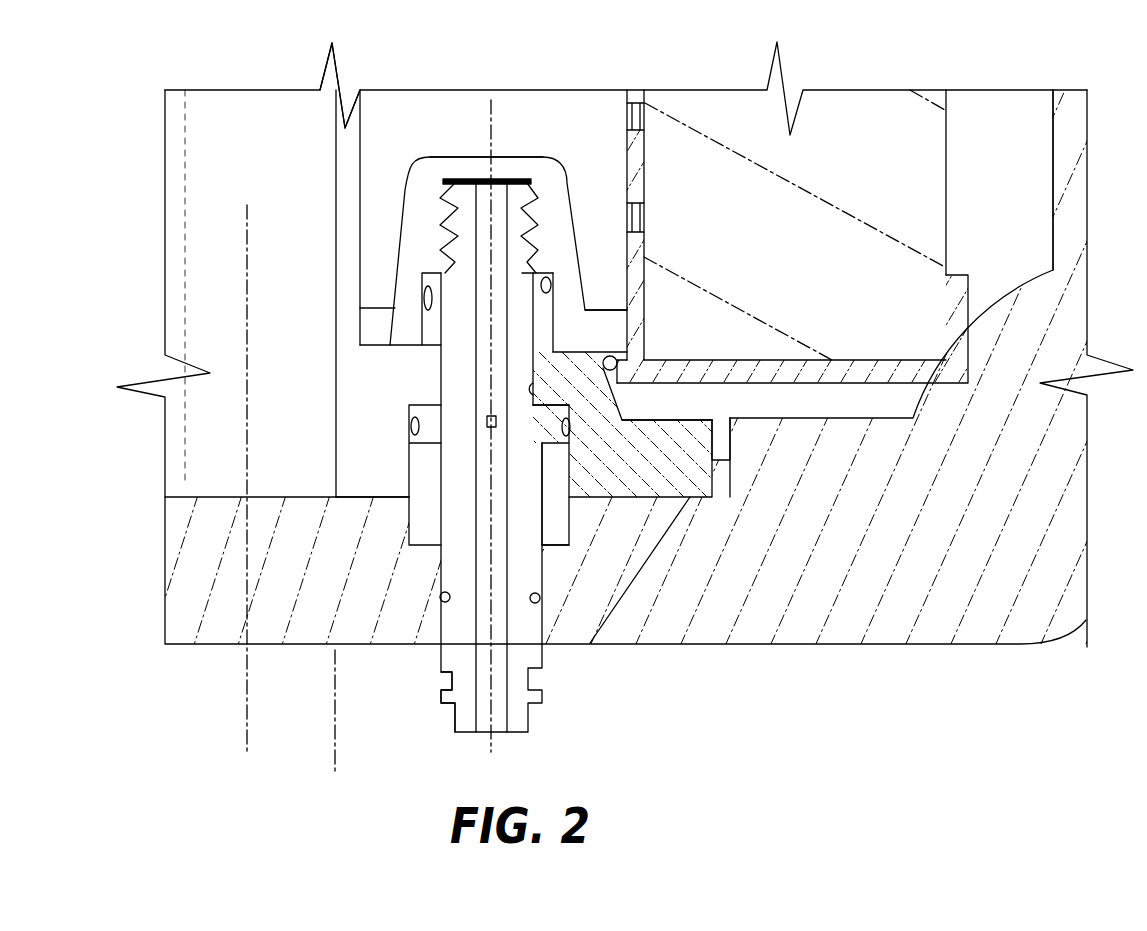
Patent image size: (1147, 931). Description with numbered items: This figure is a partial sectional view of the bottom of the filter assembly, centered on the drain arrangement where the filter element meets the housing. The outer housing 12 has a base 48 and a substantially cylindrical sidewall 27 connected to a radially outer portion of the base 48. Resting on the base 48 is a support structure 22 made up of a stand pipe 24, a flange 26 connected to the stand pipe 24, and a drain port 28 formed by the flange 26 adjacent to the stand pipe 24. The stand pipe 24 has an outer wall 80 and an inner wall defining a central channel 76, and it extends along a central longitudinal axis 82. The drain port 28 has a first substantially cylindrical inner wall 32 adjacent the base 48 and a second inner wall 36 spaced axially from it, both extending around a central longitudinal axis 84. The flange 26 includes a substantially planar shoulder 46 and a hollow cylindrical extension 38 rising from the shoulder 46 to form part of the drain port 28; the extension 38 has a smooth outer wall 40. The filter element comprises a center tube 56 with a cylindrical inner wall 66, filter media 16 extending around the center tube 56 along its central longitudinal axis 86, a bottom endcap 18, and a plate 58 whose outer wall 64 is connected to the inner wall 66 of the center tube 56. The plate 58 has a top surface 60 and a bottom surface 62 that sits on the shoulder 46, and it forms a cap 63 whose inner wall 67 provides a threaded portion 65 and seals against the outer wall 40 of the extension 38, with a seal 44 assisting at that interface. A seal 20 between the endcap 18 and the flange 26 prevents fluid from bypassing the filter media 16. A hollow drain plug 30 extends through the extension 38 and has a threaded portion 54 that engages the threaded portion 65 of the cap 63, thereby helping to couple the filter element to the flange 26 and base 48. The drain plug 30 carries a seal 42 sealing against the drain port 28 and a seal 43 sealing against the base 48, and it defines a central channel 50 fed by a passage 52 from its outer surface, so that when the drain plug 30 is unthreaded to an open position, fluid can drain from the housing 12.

The outer housing 12 is at (700, 646).
The filter media 16 is at (797, 256).
The bottom endcap 18 is at (970, 327).
The seal 20 is at (618, 380).
The support structure 22 is at (672, 399).
The stand pipe 24 is at (353, 153).
The flange 26 is at (732, 460).
The sidewall 27 is at (1067, 230).
The drain port 28 is at (563, 547).
The drain plug 30 is at (531, 718).
The first inner wall 32 is at (556, 470).
The second inner wall 36 is at (537, 388).
The extension 38 is at (565, 278).
The outer wall 40 is at (557, 332).
The seal 42 is at (568, 445).
The seal 43 is at (537, 604).
The seal 44 is at (410, 252).
The shoulder 46 is at (572, 338).
The base 48 is at (270, 480).
The central channel 50 is at (483, 682).
The passage 52 is at (485, 421).
The threaded portion 54 is at (550, 215).
The center tube 56 is at (641, 192).
The plate 58 is at (373, 323).
The top surface 60 is at (382, 307).
The bottom surface 62 is at (390, 352).
The cap 63 is at (524, 153).
The outer wall 64 is at (585, 350).
The threaded portion 65 is at (531, 157).
The inner wall 66 is at (633, 175).
The inner wall 67 is at (547, 270).
The central channel 76 is at (281, 184).
The outer wall 80 is at (362, 113).
The central longitudinal axis 82 is at (247, 310).
The central longitudinal axis 84 is at (490, 128).
The central longitudinal axis 86 is at (337, 703).